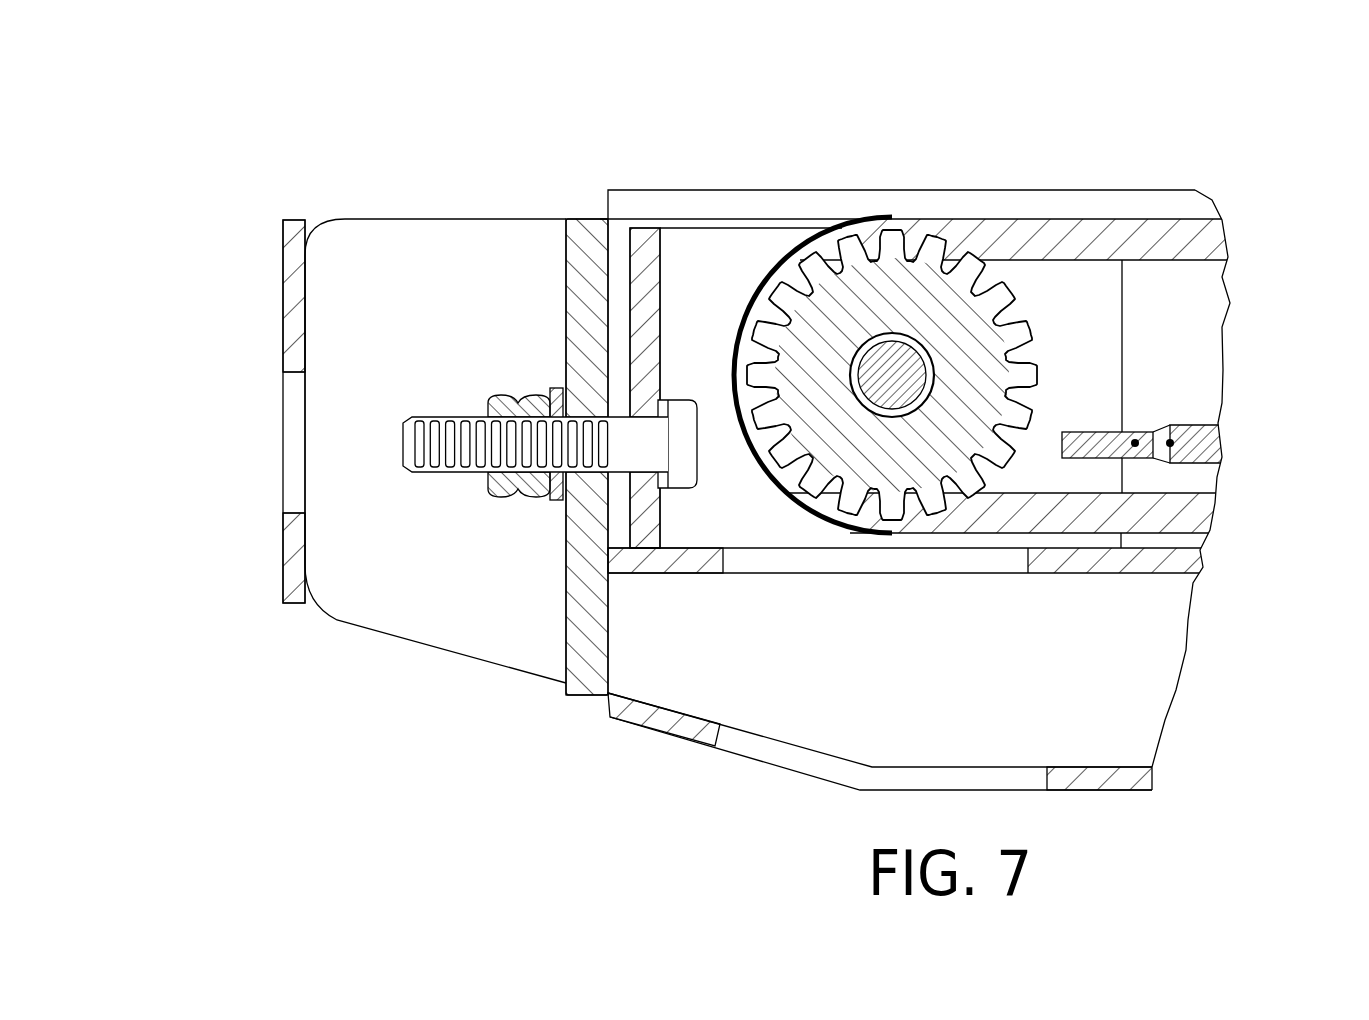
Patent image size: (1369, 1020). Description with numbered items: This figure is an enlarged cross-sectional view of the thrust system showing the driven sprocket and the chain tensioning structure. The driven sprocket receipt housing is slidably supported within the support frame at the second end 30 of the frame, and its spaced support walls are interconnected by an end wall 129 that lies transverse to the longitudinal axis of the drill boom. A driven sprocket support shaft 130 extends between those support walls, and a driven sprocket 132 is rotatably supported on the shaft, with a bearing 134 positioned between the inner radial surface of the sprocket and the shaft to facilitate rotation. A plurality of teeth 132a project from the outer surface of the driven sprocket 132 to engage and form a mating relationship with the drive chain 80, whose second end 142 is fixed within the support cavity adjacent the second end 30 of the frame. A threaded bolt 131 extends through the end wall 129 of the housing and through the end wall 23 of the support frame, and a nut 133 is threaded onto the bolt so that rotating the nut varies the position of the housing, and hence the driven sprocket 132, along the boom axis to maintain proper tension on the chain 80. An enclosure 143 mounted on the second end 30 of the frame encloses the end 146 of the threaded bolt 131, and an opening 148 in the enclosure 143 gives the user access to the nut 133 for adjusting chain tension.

The second end wall 23 is at (578, 305).
The second end of support frame 30 is at (395, 665).
The drive chain 80 is at (1075, 233).
The end wall 129 is at (643, 283).
The driven sprocket support shaft 130 is at (892, 453).
The threaded bolt 131 is at (670, 467).
The driven sprocket 132 is at (847, 463).
The teeth 132a is at (997, 460).
The nut 133 is at (508, 497).
The bearing 134 is at (880, 330).
The second end of drive chain 142 is at (1090, 432).
The enclosure 143 is at (283, 253).
The end of threaded bolt 146 is at (398, 472).
The opening 148 is at (293, 513).